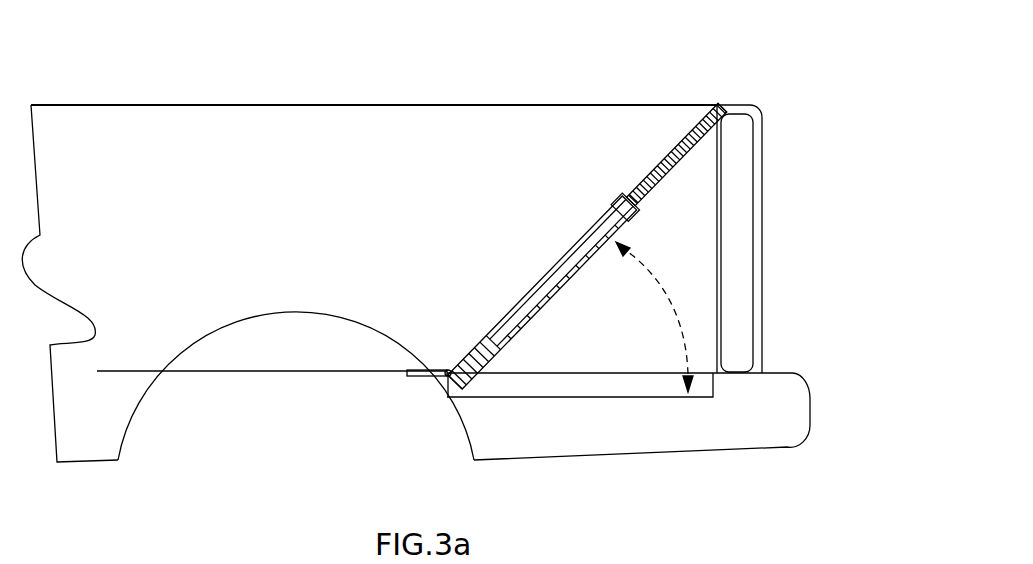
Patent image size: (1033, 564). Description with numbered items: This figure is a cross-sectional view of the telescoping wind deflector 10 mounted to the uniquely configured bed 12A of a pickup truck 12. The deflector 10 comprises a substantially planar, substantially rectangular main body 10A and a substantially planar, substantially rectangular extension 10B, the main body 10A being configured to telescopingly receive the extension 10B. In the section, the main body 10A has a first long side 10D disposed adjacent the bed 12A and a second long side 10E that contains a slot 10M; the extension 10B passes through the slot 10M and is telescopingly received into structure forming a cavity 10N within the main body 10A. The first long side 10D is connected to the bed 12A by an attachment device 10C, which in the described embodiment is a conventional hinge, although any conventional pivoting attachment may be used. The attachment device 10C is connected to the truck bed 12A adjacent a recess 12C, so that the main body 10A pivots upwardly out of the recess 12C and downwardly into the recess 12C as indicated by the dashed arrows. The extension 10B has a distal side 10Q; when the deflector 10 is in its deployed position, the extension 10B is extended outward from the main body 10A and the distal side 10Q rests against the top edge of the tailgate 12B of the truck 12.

The telescoping wind deflector 10 is at (672, 211).
The main body 10A is at (547, 272).
The extension 10B is at (677, 150).
The attachment device 10C is at (423, 377).
The first long side 10D is at (450, 398).
The second long side 10E is at (637, 205).
The slot 10M is at (624, 202).
The cavity 10N is at (540, 292).
The distal side 10Q is at (724, 104).
The pickup truck 12 is at (281, 203).
The bed 12A is at (363, 371).
The tailgate 12B is at (743, 132).
The recess 12C is at (540, 397).